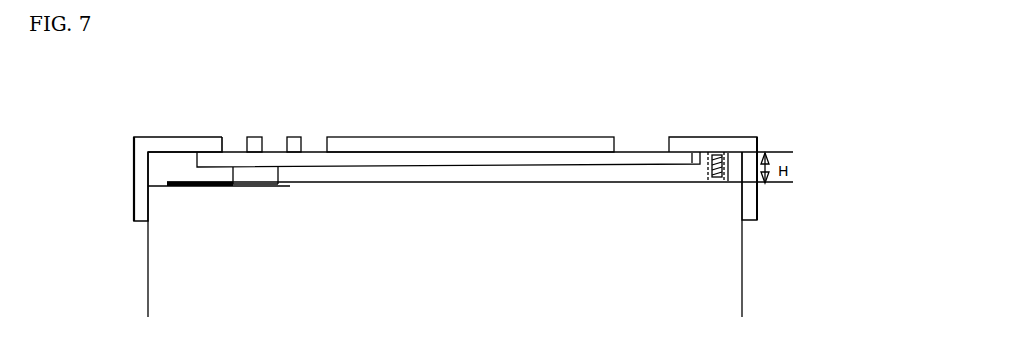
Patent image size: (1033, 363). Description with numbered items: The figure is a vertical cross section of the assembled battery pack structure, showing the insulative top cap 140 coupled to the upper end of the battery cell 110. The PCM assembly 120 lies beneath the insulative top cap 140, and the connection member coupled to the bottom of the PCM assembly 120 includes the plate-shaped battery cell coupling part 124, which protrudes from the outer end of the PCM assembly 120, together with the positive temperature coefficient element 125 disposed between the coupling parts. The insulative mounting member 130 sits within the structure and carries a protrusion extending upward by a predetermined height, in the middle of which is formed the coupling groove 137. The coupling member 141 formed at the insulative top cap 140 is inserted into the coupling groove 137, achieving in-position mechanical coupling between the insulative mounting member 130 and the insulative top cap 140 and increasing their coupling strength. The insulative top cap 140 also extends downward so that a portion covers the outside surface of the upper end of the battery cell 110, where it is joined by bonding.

The battery cell 110 is at (728, 250).
The PCM assembly 120 is at (546, 140).
The battery cell coupling part 124 is at (190, 185).
The positive temperature coefficient element 125 is at (265, 170).
The insulative mounting member 130 is at (475, 189).
The coupling groove 137 is at (708, 192).
The insulative top cap 140 is at (377, 138).
The coupling member 141 is at (717, 136).